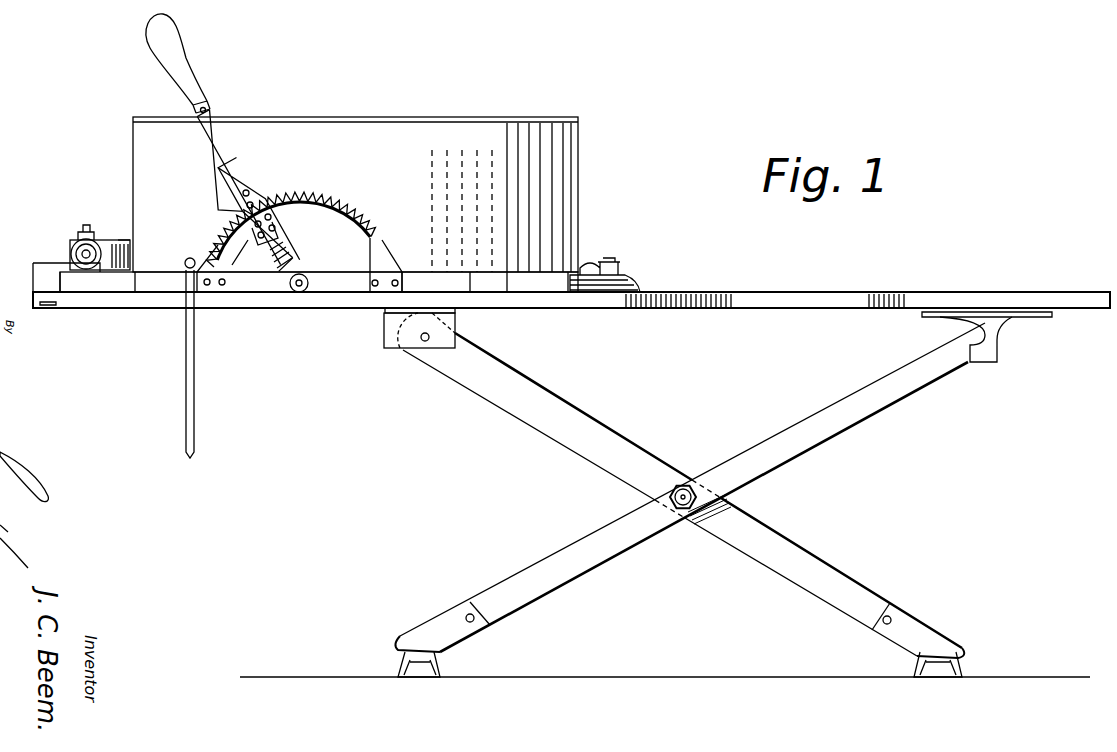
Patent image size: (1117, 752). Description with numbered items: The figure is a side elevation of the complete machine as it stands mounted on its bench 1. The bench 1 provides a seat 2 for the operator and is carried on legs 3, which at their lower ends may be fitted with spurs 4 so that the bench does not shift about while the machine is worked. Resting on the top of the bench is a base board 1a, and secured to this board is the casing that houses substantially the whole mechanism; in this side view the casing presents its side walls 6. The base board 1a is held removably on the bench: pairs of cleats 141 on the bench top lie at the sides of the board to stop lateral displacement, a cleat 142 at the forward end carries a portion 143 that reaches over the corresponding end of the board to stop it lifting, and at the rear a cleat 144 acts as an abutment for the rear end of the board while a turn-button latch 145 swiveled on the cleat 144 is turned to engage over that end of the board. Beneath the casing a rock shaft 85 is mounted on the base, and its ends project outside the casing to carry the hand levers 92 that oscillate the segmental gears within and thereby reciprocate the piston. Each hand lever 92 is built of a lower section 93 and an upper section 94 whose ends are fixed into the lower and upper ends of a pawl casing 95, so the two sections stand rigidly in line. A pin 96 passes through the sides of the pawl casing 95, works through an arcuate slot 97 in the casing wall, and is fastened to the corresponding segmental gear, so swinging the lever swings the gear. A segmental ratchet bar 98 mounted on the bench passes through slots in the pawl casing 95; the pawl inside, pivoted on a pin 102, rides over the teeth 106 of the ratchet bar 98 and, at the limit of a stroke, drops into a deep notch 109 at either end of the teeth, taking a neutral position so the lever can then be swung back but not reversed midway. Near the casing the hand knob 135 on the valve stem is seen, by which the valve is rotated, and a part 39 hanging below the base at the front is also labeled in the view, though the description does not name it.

The bench 1 is at (320, 303).
The base board 1a is at (440, 280).
The seat 2 is at (900, 292).
The legs 3 is at (700, 466).
The spurs 4 is at (445, 660).
The side walls 6 is at (152, 175).
The pointer rod 39 is at (196, 400).
The rock shaft 85 is at (296, 292).
The hand levers 92 is at (240, 175).
The lower section 93 is at (272, 252).
The upper section 94 is at (228, 122).
The pawl casing 95 is at (242, 192).
The pin 96 is at (278, 218).
The arcuate slots 97 is at (304, 203).
The segmental ratchet bar 98 is at (318, 196).
The pin 102 is at (246, 204).
The teeth 106 is at (355, 206).
The notch 109 is at (380, 238).
The hand knob 135 is at (83, 226).
The cleats 141 is at (520, 290).
The cleat 142 is at (75, 290).
The portion 143 is at (100, 280).
The cleat 144 is at (632, 282).
The turn-button latch 145 is at (622, 268).